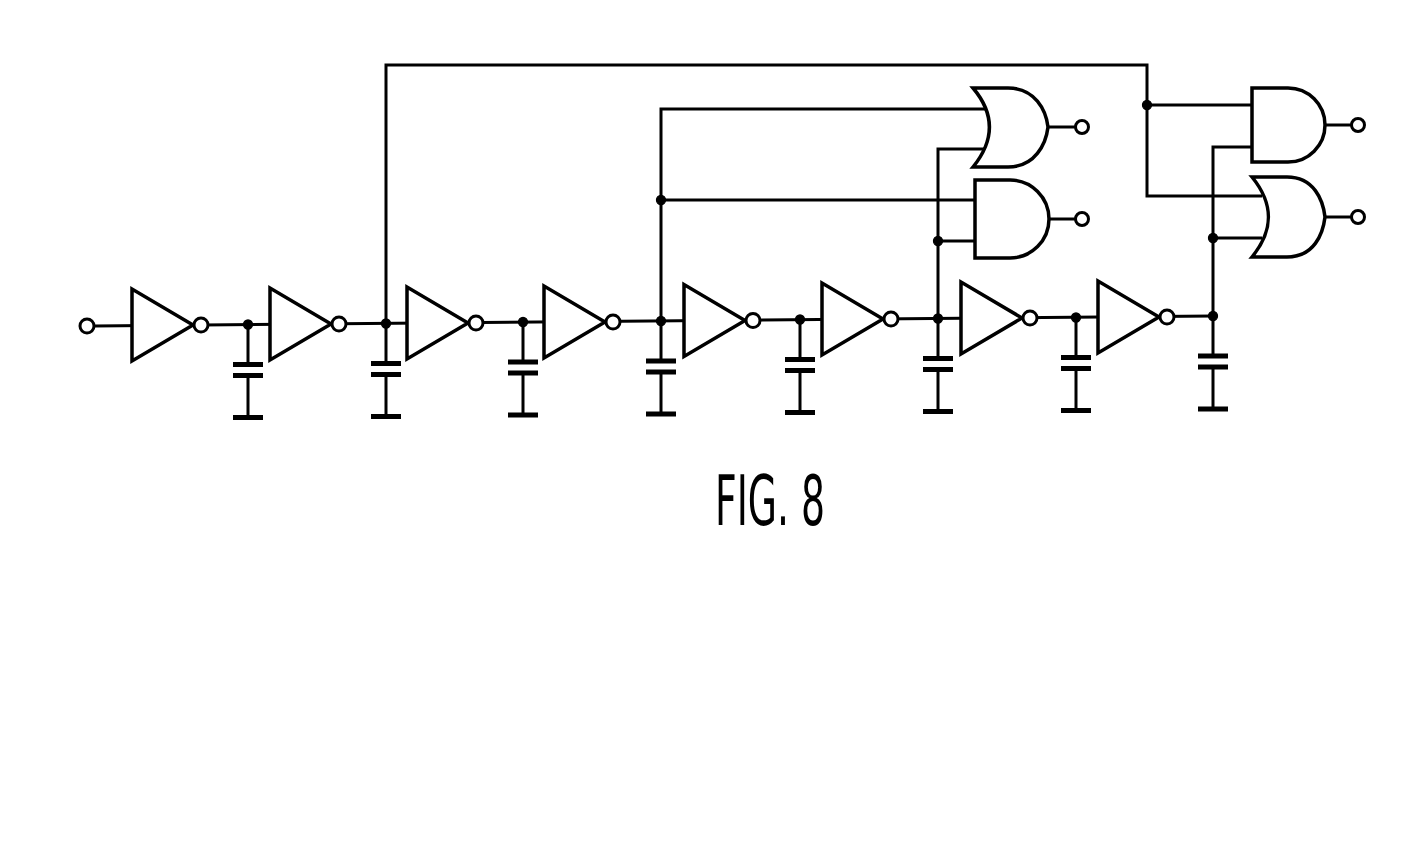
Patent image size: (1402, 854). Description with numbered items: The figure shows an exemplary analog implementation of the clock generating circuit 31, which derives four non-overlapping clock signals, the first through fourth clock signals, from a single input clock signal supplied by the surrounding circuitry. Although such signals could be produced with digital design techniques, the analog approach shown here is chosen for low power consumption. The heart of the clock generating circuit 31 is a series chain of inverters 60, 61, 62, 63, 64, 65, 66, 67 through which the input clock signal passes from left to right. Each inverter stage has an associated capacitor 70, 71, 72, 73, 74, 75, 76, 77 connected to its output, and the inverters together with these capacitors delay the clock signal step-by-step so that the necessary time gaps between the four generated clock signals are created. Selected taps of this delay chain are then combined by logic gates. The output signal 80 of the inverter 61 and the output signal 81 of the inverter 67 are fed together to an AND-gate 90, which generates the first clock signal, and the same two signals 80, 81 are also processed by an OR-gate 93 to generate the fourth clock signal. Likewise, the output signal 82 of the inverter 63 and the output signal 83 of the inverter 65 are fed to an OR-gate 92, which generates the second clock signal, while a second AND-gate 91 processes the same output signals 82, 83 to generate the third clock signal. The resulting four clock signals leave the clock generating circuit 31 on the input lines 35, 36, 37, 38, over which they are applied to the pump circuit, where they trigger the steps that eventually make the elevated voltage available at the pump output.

The clock generating circuit 31 is at (222, 108).
The input line 35 is at (1340, 128).
The input line 36 is at (1065, 222).
The input line 37 is at (1065, 130).
The input line 38 is at (1340, 220).
The inverter 60 is at (155, 312).
The inverter 61 is at (293, 311).
The inverter 62 is at (430, 310).
The inverter 63 is at (567, 309).
The inverter 64 is at (707, 308).
The inverter 65 is at (845, 306).
The inverter 66 is at (984, 305).
The inverter 67 is at (1121, 304).
The capacitor 70 is at (252, 378).
The capacitor 71 is at (390, 376).
The capacitor 72 is at (527, 375).
The capacitor 73 is at (665, 374).
The capacitor 74 is at (804, 372).
The capacitor 75 is at (942, 372).
The capacitor 76 is at (1080, 370).
The capacitor 77 is at (1217, 369).
The output signal 80 is at (386, 194).
The output signal 81 is at (1214, 292).
The output signal 82 is at (661, 247).
The output signal 83 is at (935, 166).
The AND-gate 90 is at (1299, 139).
The AND-gate 91 is at (1026, 232).
The OR-gate 92 is at (1034, 141).
The OR-gate 93 is at (1309, 231).